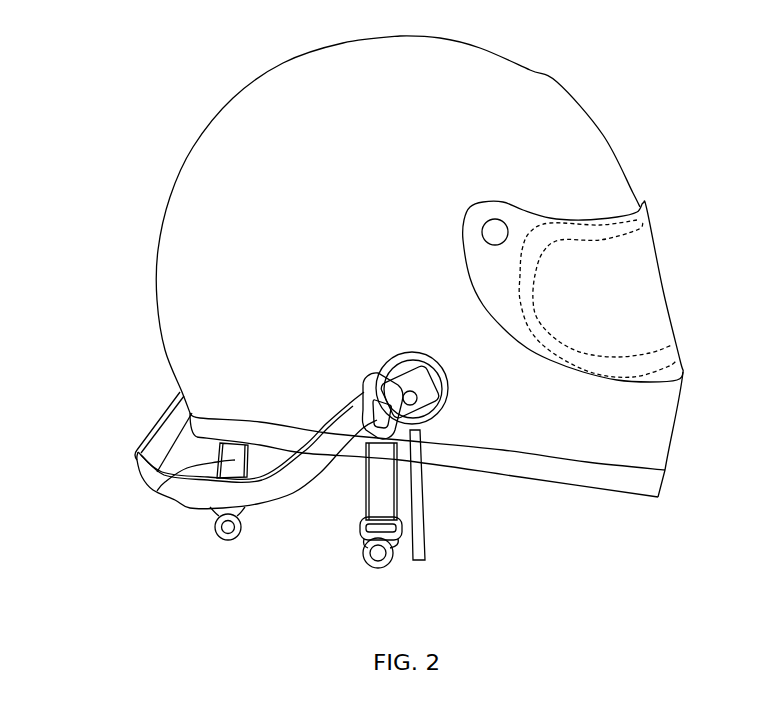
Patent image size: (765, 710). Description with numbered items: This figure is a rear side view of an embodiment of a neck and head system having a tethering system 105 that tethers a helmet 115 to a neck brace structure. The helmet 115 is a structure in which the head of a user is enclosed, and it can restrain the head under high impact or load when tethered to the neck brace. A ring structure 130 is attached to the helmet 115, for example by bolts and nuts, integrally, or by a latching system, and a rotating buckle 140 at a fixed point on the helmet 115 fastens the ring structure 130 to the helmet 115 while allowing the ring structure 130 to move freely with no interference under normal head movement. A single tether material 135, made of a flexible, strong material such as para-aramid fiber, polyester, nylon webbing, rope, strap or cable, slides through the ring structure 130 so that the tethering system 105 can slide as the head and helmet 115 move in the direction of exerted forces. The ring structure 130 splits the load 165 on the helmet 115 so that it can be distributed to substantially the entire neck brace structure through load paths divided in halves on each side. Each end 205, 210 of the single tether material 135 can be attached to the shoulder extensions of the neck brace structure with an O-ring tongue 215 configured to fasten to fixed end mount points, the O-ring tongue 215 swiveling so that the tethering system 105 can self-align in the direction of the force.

The tethering system 105 is at (150, 393).
The helmet 115 is at (193, 145).
The load 165 is at (555, 82).
The single tether material 135 is at (137, 443).
The end of the single tether material 205 is at (157, 490).
The end of the single tether material 210 is at (362, 483).
The ring structure 130 is at (383, 440).
The rotating buckle 140 is at (425, 398).
The O-ring tongue 215 is at (214, 524).